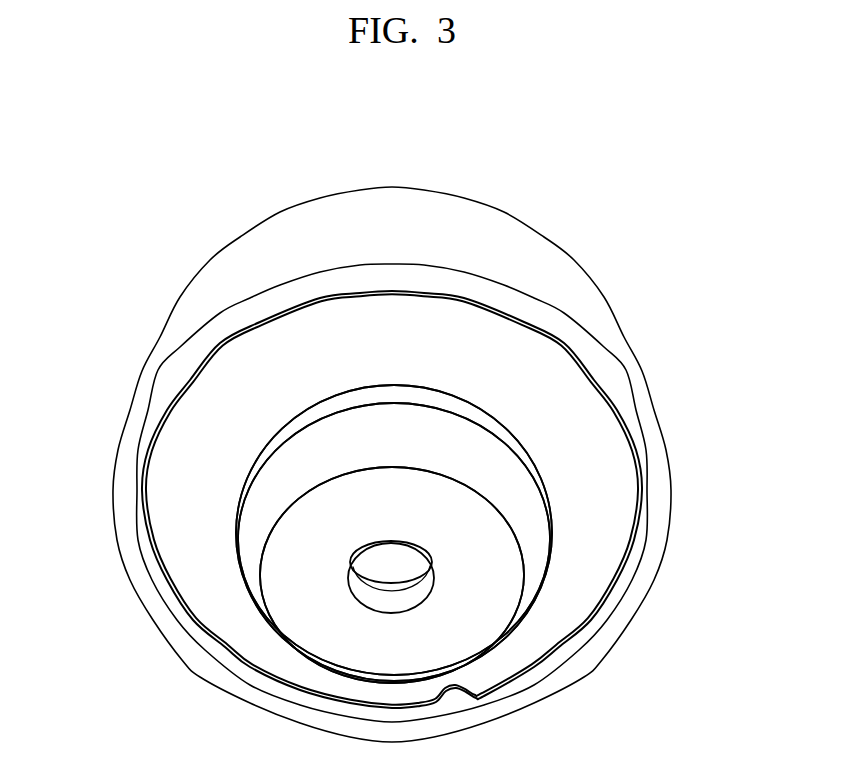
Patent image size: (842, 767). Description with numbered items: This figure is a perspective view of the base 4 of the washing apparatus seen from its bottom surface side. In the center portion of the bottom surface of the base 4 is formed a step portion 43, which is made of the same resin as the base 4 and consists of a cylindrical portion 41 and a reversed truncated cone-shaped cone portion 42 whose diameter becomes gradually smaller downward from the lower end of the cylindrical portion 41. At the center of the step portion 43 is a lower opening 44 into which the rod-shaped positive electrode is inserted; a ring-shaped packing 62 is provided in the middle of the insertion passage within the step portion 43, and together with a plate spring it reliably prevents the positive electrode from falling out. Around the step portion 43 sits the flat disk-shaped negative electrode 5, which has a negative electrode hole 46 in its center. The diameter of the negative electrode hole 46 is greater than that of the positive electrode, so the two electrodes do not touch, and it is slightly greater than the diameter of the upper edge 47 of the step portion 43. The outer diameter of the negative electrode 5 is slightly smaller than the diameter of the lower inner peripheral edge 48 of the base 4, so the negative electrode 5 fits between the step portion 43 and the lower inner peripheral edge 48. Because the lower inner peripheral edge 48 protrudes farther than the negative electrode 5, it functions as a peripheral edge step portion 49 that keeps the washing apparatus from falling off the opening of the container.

The base 4 is at (492, 212).
The cylindrical portion 41 is at (290, 427).
The cone portion 42 is at (270, 482).
The step portion 43 is at (285, 547).
The lower opening 44 is at (410, 603).
The negative electrode hole 46 is at (492, 412).
The upper edge of the step portion 47 is at (518, 435).
The lower inner peripheral edge 48 is at (622, 407).
The peripheral edge step portion 49 is at (643, 433).
The negative electrode 5 is at (593, 487).
The packing 62 is at (350, 589).